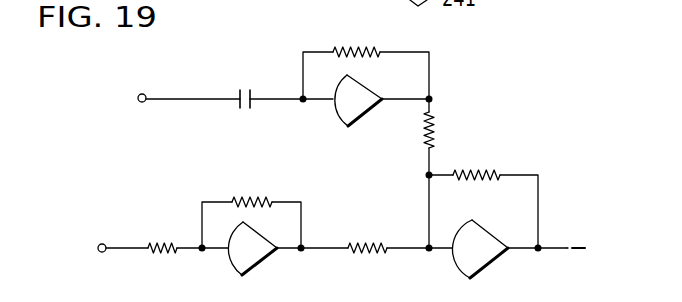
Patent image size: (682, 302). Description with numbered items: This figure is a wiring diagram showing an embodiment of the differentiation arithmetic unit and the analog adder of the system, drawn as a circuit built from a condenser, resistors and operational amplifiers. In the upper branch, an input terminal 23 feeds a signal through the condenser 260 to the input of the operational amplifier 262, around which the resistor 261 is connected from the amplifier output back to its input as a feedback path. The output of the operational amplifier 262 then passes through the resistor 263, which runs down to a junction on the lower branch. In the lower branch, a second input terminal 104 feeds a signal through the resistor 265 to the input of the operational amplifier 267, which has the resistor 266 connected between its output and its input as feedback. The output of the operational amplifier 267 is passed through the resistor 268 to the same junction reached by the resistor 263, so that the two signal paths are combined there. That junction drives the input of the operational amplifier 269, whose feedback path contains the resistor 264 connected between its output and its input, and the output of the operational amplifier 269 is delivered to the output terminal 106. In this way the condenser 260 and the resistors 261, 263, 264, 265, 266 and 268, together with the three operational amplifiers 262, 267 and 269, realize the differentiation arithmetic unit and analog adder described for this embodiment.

The input terminal 23 is at (124, 99).
The input terminal 104 is at (83, 245).
The output terminal 106 is at (598, 250).
The condenser 260 is at (251, 107).
The resistor 261 is at (338, 27).
The operational amplifier 262 is at (363, 114).
The resistor 263 is at (436, 141).
The resistor 264 is at (455, 168).
The resistor 265 is at (151, 252).
The resistor 266 is at (247, 197).
The operational amplifier 267 is at (258, 257).
The resistor 268 is at (349, 252).
The operational amplifier 269 is at (484, 262).